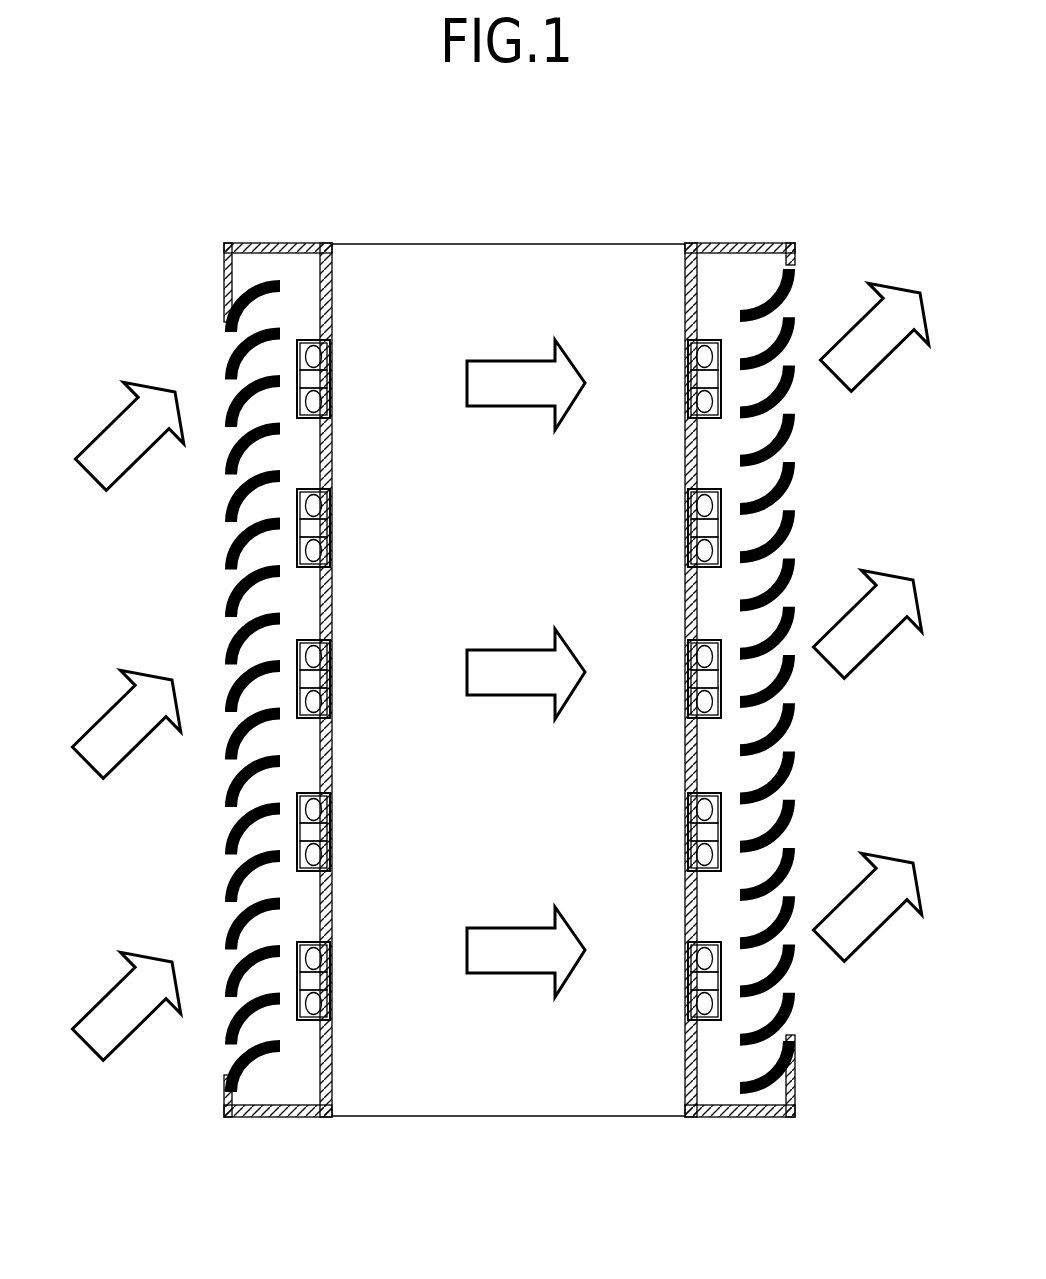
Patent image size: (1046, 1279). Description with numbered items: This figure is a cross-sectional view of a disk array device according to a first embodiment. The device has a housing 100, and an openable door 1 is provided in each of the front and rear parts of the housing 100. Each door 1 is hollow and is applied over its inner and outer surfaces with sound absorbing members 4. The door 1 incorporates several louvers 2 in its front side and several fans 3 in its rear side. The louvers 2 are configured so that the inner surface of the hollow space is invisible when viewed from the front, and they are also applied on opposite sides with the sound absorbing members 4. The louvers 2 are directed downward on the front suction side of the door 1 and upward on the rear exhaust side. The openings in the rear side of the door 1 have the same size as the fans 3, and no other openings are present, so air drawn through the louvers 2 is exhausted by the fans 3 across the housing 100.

The door 1 is at (266, 243).
The housing 100 is at (431, 292).
The louvers 2 is at (197, 689).
The fans 3 is at (721, 386).
The sound absorbing members 4 is at (697, 1058).